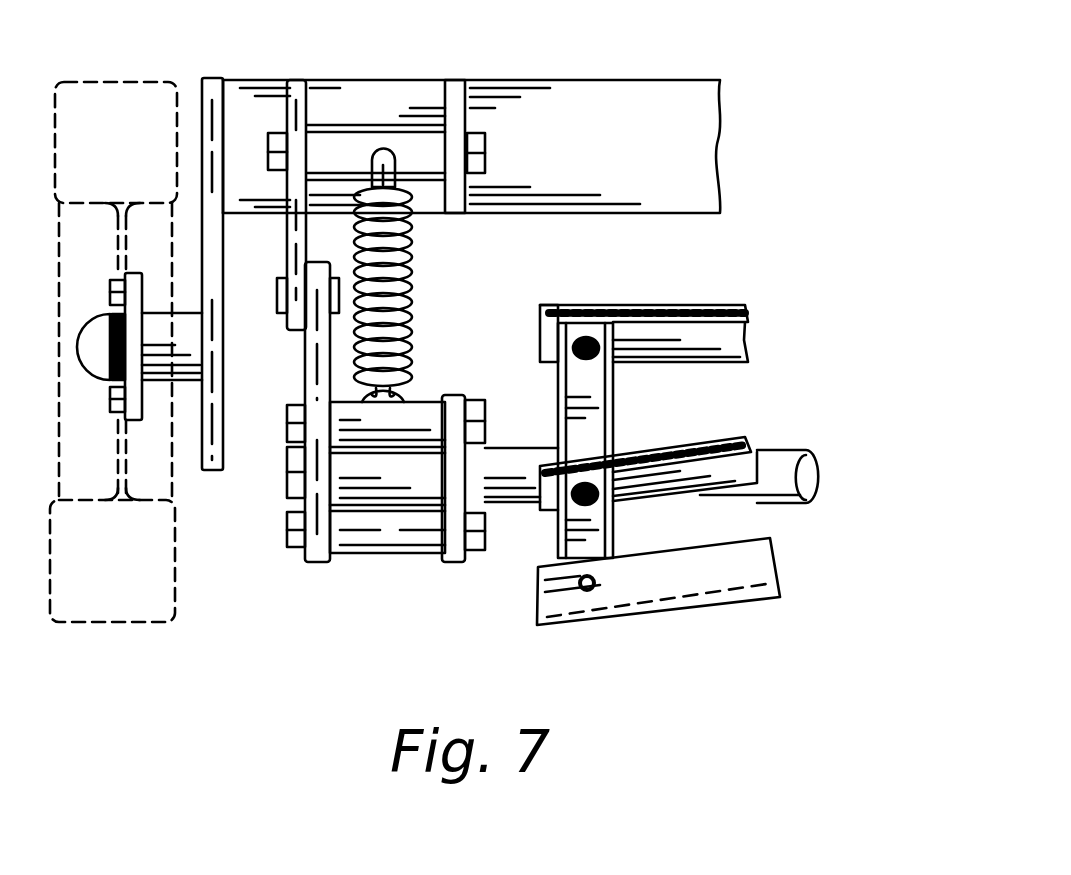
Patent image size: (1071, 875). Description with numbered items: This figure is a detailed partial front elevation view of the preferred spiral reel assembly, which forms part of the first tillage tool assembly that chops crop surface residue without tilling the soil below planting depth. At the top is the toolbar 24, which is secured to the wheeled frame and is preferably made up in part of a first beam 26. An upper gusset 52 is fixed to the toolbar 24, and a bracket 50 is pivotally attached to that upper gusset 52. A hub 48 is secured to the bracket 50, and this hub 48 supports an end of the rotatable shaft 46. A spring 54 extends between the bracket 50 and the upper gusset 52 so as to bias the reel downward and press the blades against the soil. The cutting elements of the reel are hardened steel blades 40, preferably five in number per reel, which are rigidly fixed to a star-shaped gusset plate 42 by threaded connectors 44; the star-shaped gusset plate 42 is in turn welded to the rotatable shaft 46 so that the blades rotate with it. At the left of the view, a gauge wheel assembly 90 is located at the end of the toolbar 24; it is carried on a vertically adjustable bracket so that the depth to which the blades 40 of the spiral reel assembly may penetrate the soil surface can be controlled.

The toolbar 24 is at (688, 78).
The first beam 26 is at (600, 97).
The hardened steel blades 40 is at (742, 328).
The star-shaped gusset plate 42 is at (558, 393).
The threaded connectors 44 is at (588, 340).
The rotatable shaft 46 is at (815, 458).
The hub 48 is at (290, 503).
The bracket 50 is at (320, 565).
The upper gusset 52 is at (303, 118).
The spring 54 is at (410, 327).
The gauge wheel assembly 90 is at (109, 630).